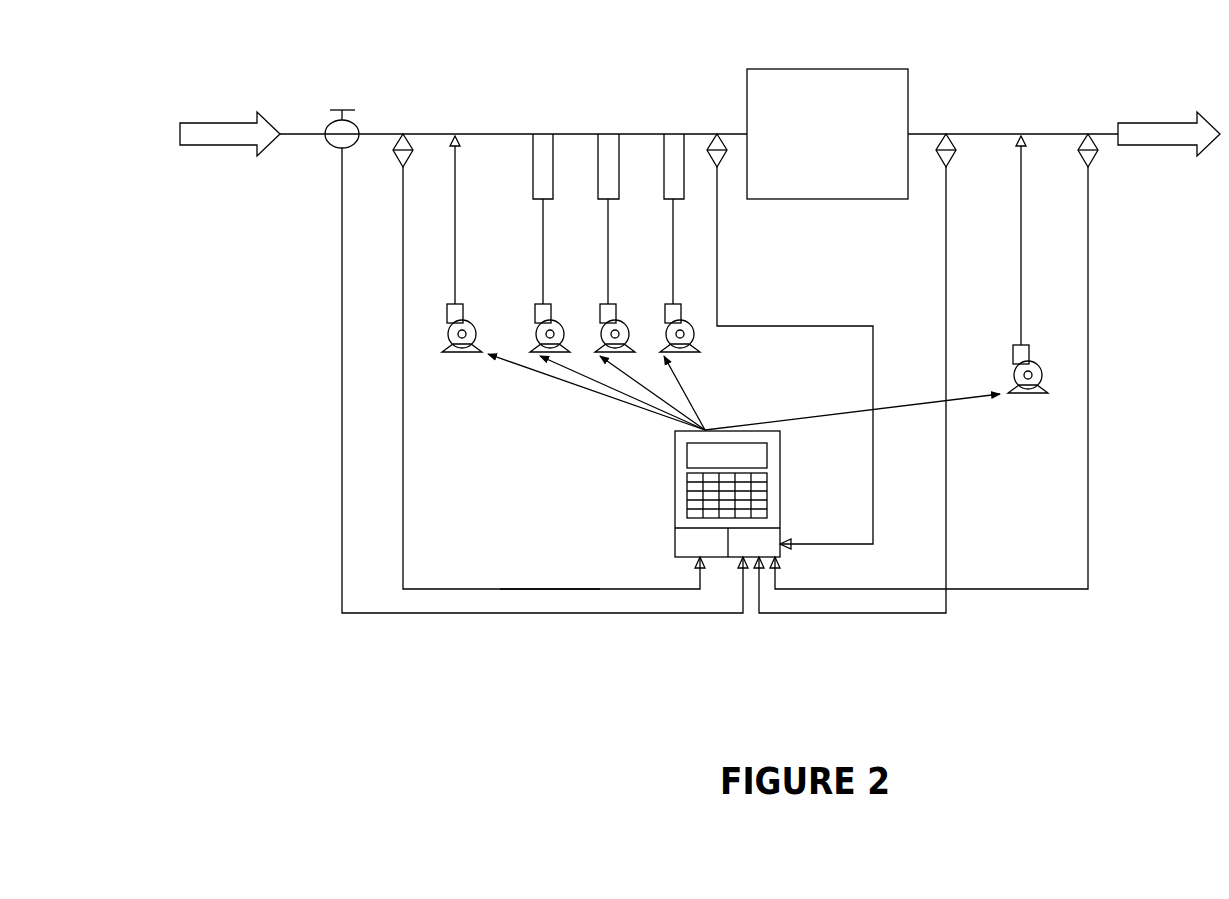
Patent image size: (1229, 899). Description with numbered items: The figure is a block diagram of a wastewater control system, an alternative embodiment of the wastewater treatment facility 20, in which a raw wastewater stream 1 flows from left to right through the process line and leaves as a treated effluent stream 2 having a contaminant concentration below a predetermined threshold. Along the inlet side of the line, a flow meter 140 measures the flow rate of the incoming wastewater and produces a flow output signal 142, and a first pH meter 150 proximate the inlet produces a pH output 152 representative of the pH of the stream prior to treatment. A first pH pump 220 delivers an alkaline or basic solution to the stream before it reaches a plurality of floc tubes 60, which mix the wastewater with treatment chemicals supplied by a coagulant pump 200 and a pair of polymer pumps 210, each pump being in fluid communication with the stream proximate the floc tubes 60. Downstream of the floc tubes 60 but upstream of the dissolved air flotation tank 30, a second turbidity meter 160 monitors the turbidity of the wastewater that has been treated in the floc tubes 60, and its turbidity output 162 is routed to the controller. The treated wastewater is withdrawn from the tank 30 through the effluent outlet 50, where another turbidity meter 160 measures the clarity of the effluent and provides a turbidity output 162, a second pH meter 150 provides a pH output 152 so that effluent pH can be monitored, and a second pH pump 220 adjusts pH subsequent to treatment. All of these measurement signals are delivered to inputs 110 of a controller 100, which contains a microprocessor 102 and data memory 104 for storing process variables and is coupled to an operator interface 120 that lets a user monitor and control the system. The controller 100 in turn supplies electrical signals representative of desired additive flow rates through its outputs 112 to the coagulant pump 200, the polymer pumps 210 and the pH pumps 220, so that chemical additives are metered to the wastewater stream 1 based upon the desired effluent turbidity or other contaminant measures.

The wastewater stream 1 is at (240, 126).
The effluent stream 2 is at (1150, 128).
The wastewater treatment facility 20 is at (860, 46).
The dissolved air flotation tank 30 is at (912, 95).
The effluent outlet 50 is at (1106, 128).
The floc tubes 60 is at (558, 155).
The controller 100 is at (773, 462).
The microprocessor 102 is at (708, 542).
The data memory 104 is at (754, 545).
The inputs 110 is at (660, 588).
The outputs 112 is at (650, 412).
The operator interface 120 is at (766, 480).
The flow meter 140 is at (350, 120).
The flow output signal 142 is at (346, 196).
The pH meter 150 is at (404, 132).
The pH output 152 is at (401, 206).
The turbidity meter 160 is at (716, 130).
The turbidity output 162 is at (720, 228).
The coagulant pump 200 is at (556, 360).
The polymer pump 210 is at (618, 360).
The pH pump 220 is at (450, 356).